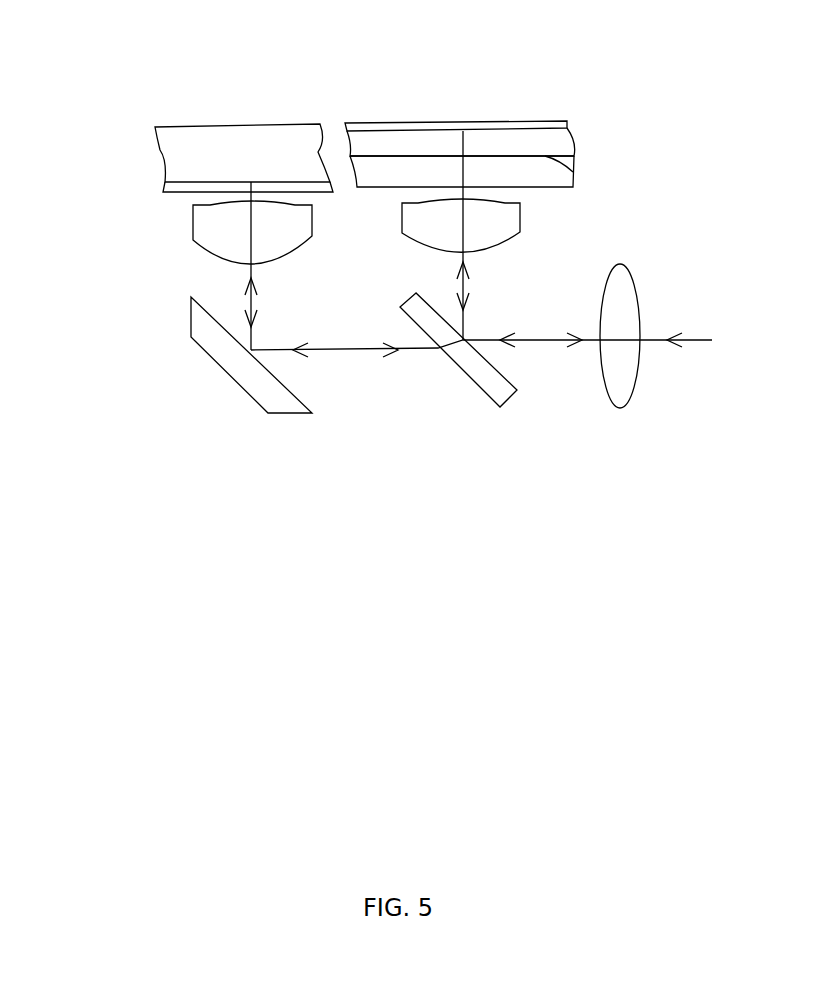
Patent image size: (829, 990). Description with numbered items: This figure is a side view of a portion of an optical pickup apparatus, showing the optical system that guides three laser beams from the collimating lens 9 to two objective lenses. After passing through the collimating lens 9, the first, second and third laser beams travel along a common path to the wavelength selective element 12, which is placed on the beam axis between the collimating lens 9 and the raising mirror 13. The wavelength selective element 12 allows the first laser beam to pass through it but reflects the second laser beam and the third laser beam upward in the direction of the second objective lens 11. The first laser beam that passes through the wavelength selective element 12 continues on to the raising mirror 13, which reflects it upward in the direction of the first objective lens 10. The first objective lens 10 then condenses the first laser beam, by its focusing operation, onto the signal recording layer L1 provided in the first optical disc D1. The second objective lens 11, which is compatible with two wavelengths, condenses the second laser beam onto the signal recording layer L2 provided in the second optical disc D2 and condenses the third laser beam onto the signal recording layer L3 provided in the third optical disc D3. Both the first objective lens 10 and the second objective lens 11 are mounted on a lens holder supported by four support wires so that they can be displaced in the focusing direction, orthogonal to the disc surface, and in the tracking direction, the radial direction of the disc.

The collimating lens 9 is at (630, 290).
The first objective lens 10 is at (200, 232).
The second objective lens 11 is at (505, 222).
The wavelength selective element 12 is at (480, 373).
The raising mirror 13 is at (262, 390).
The first optical disc D1 is at (178, 136).
The second optical disc D2 is at (578, 143).
The third optical disc D3 is at (462, 171).
The signal recording layer L1 is at (185, 183).
The signal recording layer L2 is at (575, 171).
The signal recording layer L3 is at (525, 125).